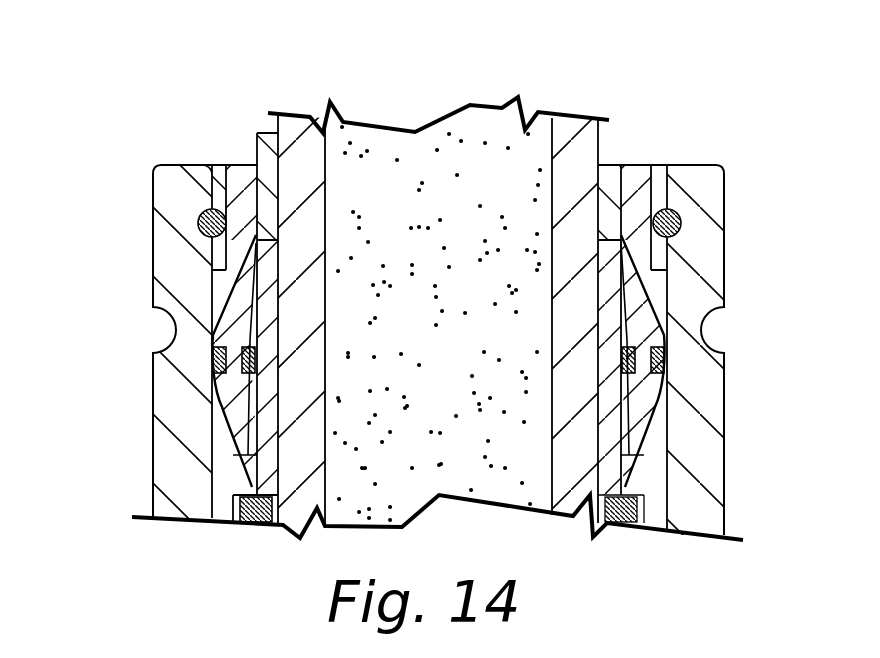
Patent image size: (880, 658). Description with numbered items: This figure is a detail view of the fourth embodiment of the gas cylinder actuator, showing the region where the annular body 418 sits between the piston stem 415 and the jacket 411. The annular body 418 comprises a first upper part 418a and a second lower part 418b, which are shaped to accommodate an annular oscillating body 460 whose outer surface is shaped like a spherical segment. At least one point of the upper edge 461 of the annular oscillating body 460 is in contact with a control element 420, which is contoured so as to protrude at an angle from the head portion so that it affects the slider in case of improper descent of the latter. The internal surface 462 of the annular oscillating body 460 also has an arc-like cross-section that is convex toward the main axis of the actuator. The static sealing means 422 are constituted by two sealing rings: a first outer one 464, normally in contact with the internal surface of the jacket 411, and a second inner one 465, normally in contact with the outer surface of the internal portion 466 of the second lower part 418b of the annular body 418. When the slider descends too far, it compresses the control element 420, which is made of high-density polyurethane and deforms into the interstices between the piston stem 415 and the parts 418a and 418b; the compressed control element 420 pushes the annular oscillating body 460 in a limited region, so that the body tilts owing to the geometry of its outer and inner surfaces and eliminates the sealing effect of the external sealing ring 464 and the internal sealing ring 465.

The jacket 411 is at (685, 505).
The piston stem 415 is at (306, 150).
The annular body 418 is at (660, 196).
The first upper part 418a is at (656, 194).
The second lower part 418b is at (228, 472).
The control element 420 is at (252, 140).
The static sealing means 422 is at (206, 359).
The annular oscillating body 460 is at (207, 302).
The upper edge 461 is at (232, 242).
The internal surface 462 is at (621, 282).
The first outer sealing ring 464 is at (667, 360).
The second inner sealing ring 465 is at (623, 375).
The internal portion 466 is at (273, 287).